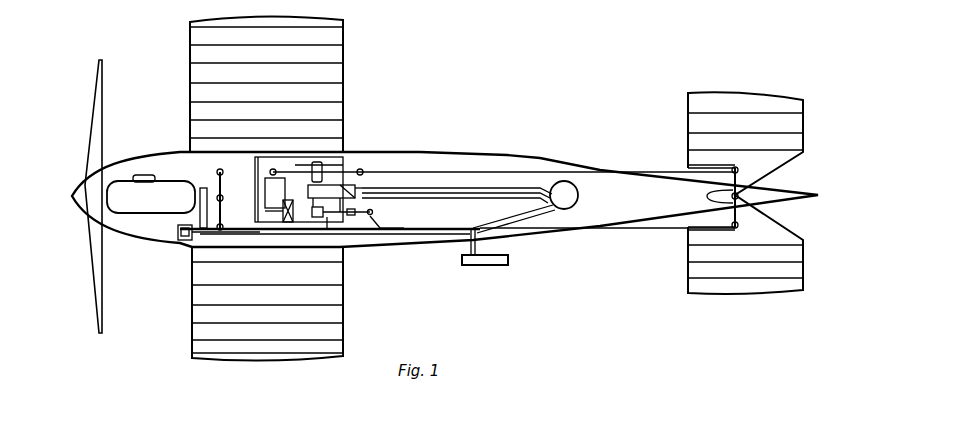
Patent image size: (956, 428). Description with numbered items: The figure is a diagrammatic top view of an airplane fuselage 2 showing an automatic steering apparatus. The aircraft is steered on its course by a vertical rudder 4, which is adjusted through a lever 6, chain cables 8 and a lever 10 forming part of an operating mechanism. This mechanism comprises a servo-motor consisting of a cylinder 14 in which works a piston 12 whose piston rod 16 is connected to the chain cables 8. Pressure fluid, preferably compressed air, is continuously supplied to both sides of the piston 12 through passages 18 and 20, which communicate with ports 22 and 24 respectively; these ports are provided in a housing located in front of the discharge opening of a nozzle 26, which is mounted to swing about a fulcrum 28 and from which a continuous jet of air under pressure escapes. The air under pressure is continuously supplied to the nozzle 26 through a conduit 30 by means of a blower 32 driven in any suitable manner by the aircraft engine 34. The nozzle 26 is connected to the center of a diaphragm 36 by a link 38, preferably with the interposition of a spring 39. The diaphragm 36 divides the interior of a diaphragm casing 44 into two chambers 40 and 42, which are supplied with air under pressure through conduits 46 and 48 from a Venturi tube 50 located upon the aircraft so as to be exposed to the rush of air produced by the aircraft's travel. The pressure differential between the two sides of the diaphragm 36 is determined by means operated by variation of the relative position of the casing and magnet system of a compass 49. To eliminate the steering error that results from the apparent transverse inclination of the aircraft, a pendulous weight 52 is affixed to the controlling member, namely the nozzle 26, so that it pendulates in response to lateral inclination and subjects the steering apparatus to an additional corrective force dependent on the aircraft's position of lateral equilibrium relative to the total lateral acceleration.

The fuselage 2 is at (541, 153).
The vertical rudder 4 is at (782, 196).
The lever 6 is at (733, 185).
The chain cables 8 is at (582, 166).
The lever 10 is at (218, 170).
The piston 12 is at (315, 162).
The cylinder 14 is at (350, 168).
The piston rod 16 is at (343, 190).
The passage 18 is at (256, 183).
The passage 20 is at (343, 153).
The port 22 is at (286, 222).
The port 24 is at (286, 200).
The nozzle 26 is at (363, 230).
The fulcrum 28 is at (378, 233).
The conduit 30 is at (222, 233).
The blower 32 is at (175, 242).
The aircraft engine 34 is at (157, 197).
The diaphragm 36 is at (362, 190).
The link 38 is at (327, 222).
The spring 39 is at (404, 233).
The chamber 40 is at (346, 192).
The chamber 42 is at (350, 250).
The diaphragm casing 44 is at (316, 222).
The conduit 46 is at (458, 187).
The conduit 48 is at (480, 197).
The compass 49 is at (567, 209).
The Venturi tube 50 is at (500, 265).
The weight 52 is at (332, 247).